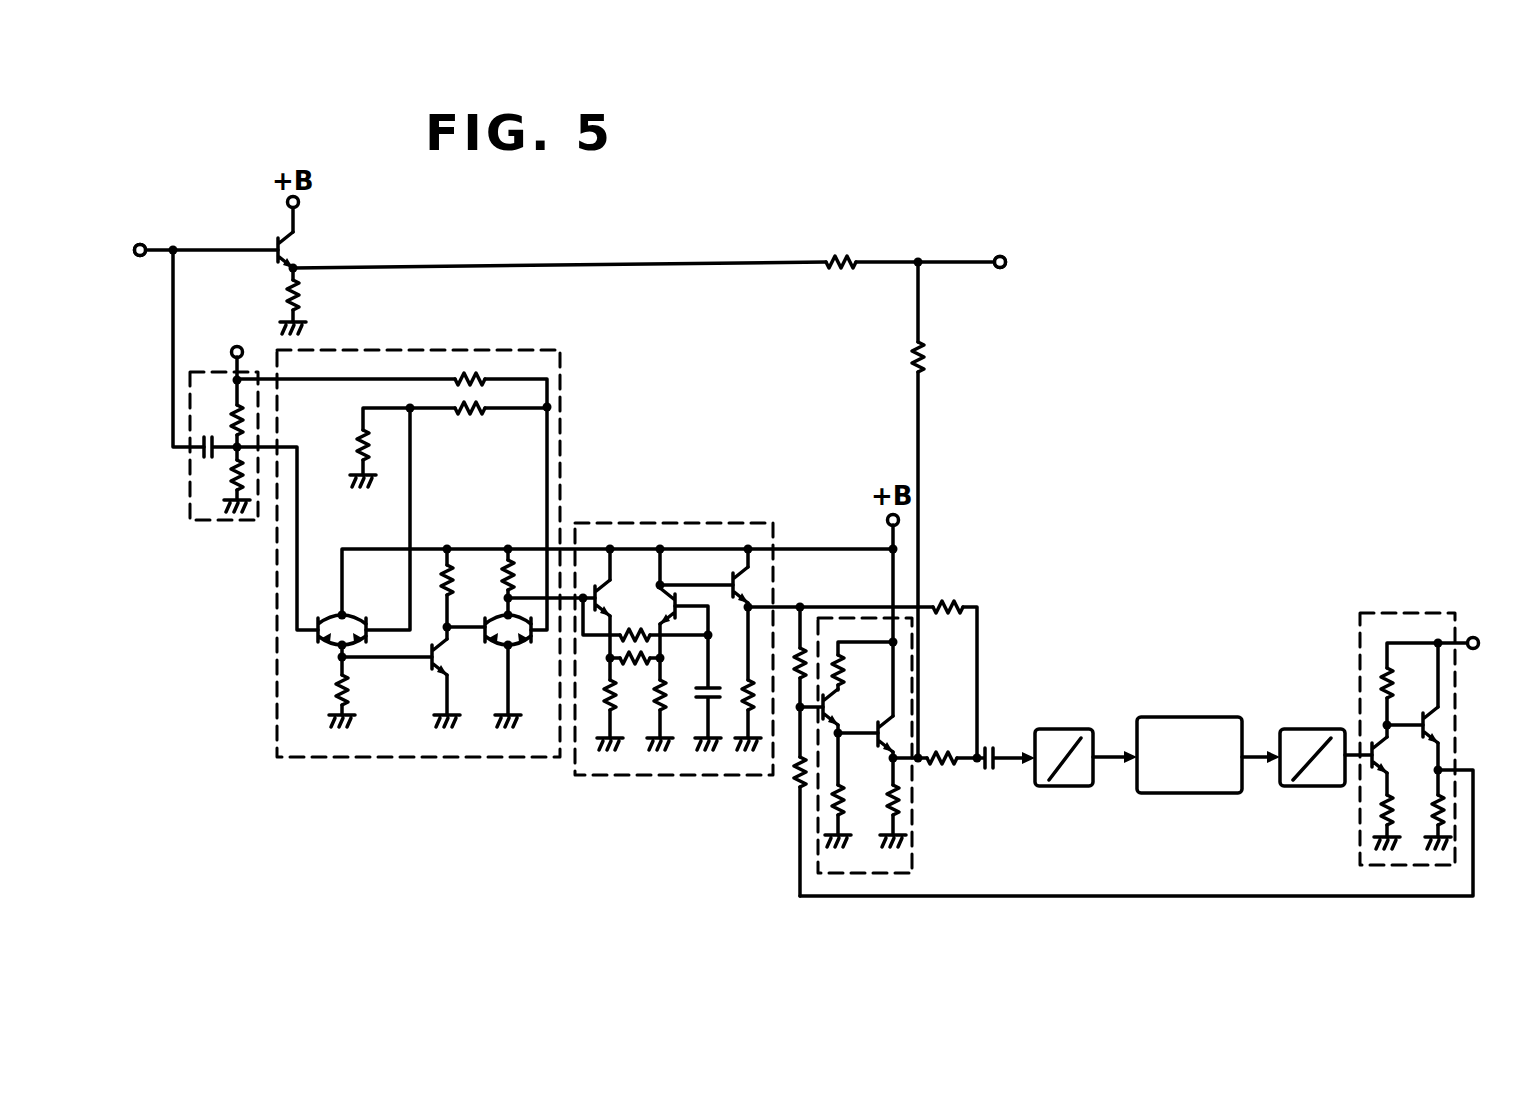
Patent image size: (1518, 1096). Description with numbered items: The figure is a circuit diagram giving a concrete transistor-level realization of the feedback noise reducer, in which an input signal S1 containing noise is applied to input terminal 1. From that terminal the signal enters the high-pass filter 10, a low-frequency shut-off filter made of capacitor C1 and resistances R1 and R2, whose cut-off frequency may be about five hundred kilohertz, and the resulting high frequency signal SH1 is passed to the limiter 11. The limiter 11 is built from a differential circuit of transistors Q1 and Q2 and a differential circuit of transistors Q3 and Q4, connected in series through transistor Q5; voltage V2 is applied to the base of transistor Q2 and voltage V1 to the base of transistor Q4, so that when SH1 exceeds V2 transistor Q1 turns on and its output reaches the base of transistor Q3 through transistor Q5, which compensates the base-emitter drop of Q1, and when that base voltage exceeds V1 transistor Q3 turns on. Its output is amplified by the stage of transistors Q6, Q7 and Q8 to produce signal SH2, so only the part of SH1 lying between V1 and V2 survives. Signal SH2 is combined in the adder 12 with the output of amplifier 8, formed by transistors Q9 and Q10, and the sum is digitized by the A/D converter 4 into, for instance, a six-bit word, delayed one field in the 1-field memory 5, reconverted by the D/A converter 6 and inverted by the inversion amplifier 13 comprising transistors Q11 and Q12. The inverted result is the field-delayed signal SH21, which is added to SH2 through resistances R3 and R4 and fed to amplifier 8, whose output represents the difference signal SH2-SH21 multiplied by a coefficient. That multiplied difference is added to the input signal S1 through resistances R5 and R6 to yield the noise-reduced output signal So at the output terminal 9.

The input terminal 1 is at (143, 244).
The A/D converter 4 is at (1060, 729).
The 1-field memory 5 is at (1190, 717).
The D/A converter 6 is at (1319, 729).
The amplifier 8 is at (914, 862).
The output terminal 9 is at (1000, 269).
The high-pass filter 10 is at (186, 492).
The limiter 11 is at (474, 350).
The adder 12 is at (644, 522).
The inversion amplifier 13 is at (1410, 612).
The input signal S1 is at (188, 253).
The output signal So is at (1029, 261).
The resistance R1 is at (246, 422).
The resistance R2 is at (230, 473).
The resistance R3 is at (806, 650).
The resistance R4 is at (796, 781).
The resistance R5 is at (843, 255).
The resistance R6 is at (935, 356).
The capacitor C1 is at (216, 436).
The voltage V1 is at (556, 405).
The voltage V2 is at (418, 414).
The transistor Q1 is at (318, 640).
The transistor Q2 is at (370, 628).
The transistor Q3 is at (486, 640).
The transistor Q4 is at (534, 640).
The transistor Q5 is at (433, 664).
The transistor Q6 is at (600, 598).
The transistor Q7 is at (678, 600).
The transistor Q8 is at (735, 572).
The transistor Q9 is at (828, 706).
The transistor Q10 is at (880, 746).
The transistor Q11 is at (1370, 764).
The transistor Q12 is at (1426, 722).
The high frequency signal SH1 is at (276, 465).
The signal SH2 is at (790, 604).
The signal SH21 is at (1102, 895).
The difference signal SH2-SH21 is at (921, 543).